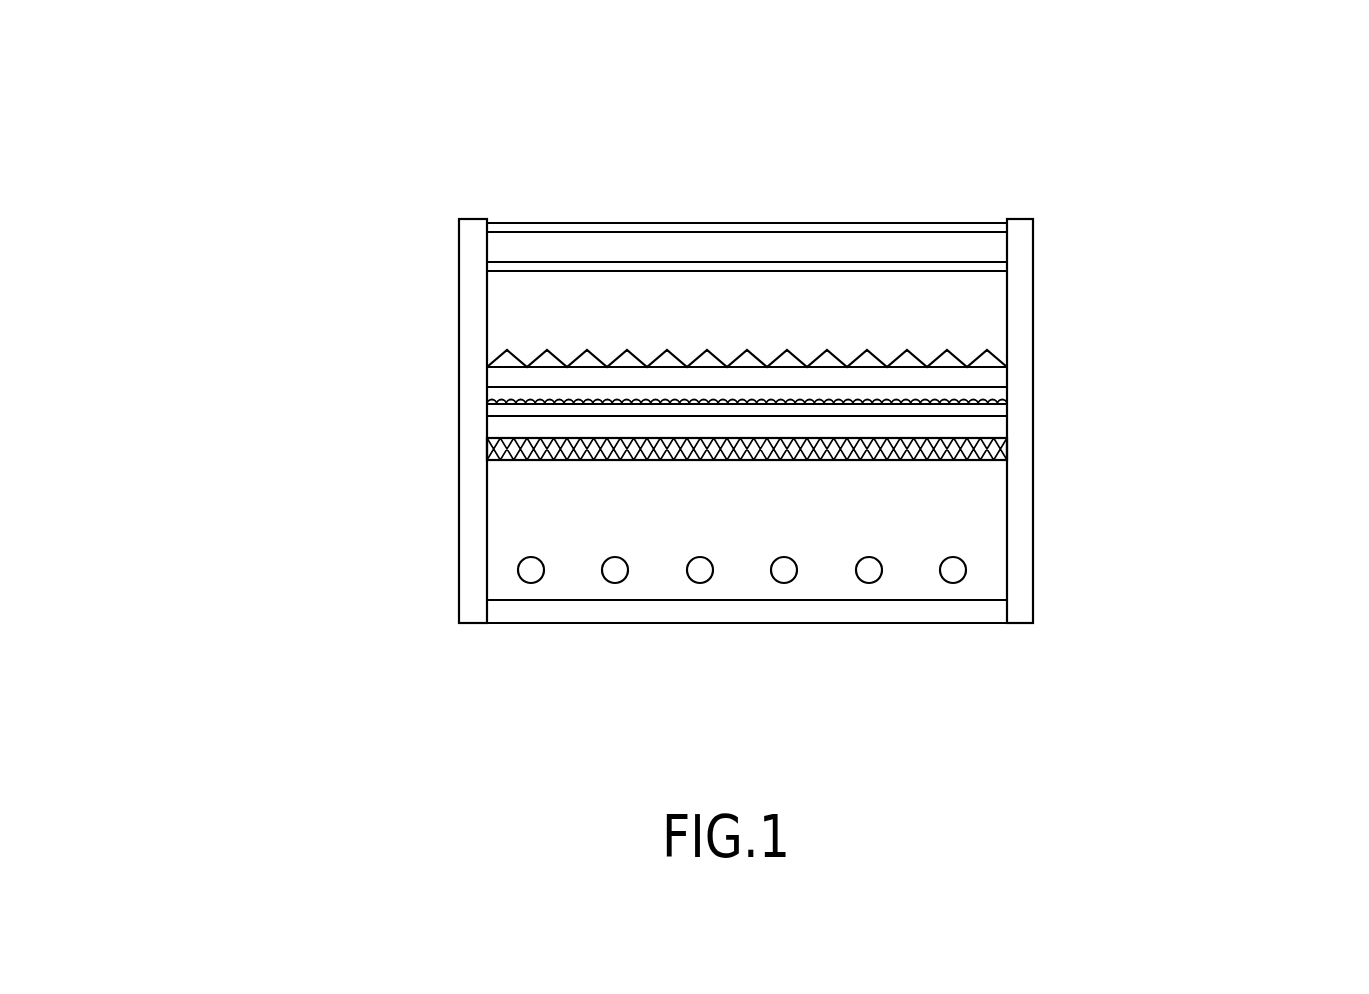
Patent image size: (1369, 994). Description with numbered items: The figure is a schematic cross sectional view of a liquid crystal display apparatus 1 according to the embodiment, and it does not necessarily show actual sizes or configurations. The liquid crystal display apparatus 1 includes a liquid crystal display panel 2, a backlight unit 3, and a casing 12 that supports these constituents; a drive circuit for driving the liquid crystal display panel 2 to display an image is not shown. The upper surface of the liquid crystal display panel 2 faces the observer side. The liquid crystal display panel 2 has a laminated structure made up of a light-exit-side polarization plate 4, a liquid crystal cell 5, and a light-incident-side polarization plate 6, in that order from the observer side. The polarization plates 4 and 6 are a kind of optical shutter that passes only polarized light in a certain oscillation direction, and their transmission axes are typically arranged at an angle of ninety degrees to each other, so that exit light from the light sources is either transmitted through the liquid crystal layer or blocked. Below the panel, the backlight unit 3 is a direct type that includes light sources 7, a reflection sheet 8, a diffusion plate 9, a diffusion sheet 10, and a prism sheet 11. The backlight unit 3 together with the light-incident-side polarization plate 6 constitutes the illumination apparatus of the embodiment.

The liquid crystal display apparatus 1 is at (494, 90).
The liquid crystal display panel 2 is at (450, 213).
The backlight unit 3 is at (448, 350).
The light-exit-side polarization plate 4 is at (985, 221).
The liquid crystal cell 5 is at (987, 243).
The light-incident-side polarization plate 6 is at (978, 270).
The light sources 7 is at (966, 568).
The reflection sheet 8 is at (892, 622).
The diffusion plate 9 is at (1007, 445).
The diffusion sheet 10 is at (1007, 402).
The prism sheet 11 is at (990, 373).
The casing 12 is at (1035, 608).